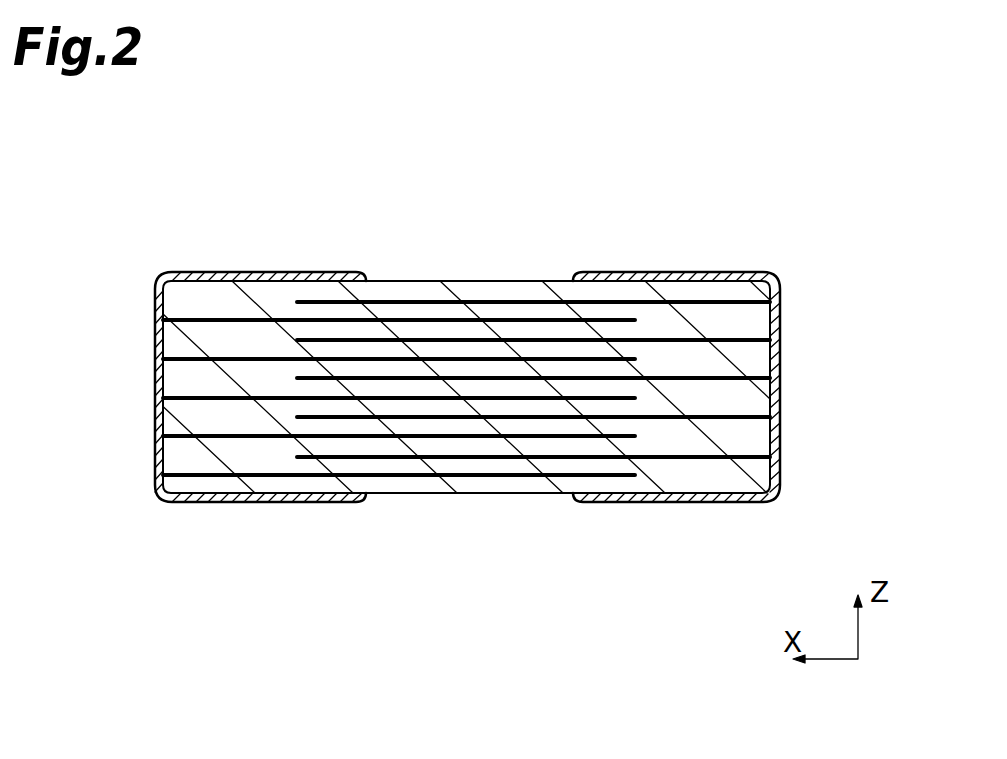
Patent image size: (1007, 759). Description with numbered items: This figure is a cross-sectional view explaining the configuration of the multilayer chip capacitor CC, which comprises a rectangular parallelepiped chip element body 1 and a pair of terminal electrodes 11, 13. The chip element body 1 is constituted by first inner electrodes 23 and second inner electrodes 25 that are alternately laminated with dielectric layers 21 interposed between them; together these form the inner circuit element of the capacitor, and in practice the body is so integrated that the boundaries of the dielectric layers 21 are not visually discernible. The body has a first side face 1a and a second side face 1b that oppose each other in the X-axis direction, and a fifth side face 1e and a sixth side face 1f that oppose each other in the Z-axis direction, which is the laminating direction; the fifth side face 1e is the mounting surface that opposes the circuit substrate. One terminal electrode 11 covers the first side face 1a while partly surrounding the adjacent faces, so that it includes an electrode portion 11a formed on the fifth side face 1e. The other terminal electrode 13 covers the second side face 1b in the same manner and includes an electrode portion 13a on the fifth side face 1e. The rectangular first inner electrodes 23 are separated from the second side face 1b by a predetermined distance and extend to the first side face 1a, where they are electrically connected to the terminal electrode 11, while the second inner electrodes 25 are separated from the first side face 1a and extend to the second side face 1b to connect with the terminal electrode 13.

The multilayer chip capacitor CC is at (814, 199).
The chip element body 1 is at (530, 278).
The first side face 1a is at (776, 360).
The second side face 1b is at (157, 412).
The fifth side face 1e is at (383, 281).
The sixth side face 1f is at (454, 495).
The terminal electrode 11 is at (776, 415).
The electrode portion 11a is at (673, 272).
The terminal electrode 13 is at (157, 375).
The electrode portion 13a is at (233, 274).
The dielectric layers 21 is at (347, 350).
The first inner electrodes 23 is at (500, 337).
The second inner electrodes 25 is at (437, 353).